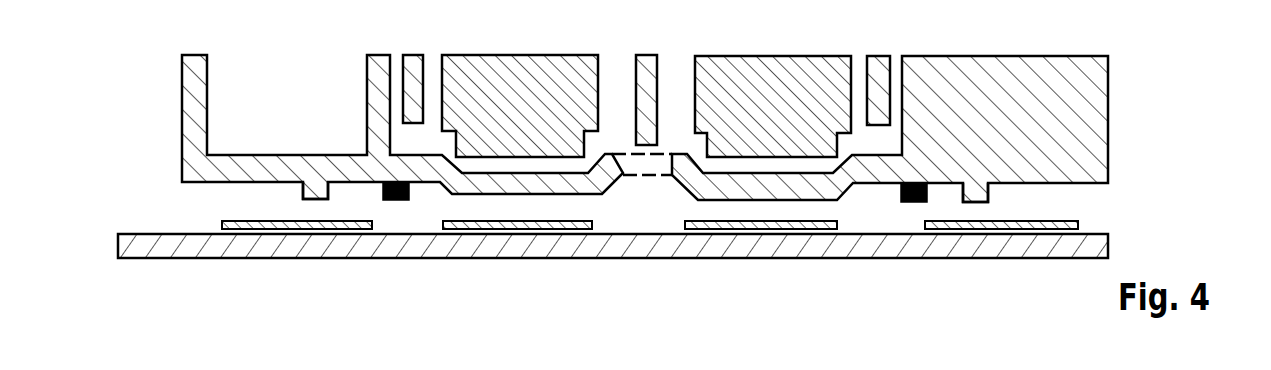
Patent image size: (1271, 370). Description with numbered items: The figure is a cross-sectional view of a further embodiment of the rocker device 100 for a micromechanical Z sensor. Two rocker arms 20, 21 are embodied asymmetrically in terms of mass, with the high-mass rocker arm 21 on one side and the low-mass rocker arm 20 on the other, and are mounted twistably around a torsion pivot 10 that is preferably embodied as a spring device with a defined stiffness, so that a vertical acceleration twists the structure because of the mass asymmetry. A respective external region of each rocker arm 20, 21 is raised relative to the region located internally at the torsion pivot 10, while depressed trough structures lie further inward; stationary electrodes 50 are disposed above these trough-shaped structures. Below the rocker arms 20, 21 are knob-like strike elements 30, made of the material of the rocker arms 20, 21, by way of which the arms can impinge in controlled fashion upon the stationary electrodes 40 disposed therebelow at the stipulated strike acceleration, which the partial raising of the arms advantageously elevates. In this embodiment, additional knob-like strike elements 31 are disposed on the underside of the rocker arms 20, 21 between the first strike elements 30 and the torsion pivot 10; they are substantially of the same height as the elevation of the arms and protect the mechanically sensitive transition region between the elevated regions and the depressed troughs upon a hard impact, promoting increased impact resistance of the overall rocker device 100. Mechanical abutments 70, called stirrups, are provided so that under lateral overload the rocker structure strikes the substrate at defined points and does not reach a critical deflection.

The torsion pivot 10 is at (648, 55).
The rocker arm 20 is at (182, 118).
The rocker arm 21 is at (1108, 118).
The strike element 30 is at (303, 195).
The additional strike element 31 is at (396, 200).
The electrode 40 is at (318, 229).
The stationary electrode 50 is at (520, 55).
The mechanical abutment 70 is at (413, 55).
The rocker device 100 is at (217, 278).